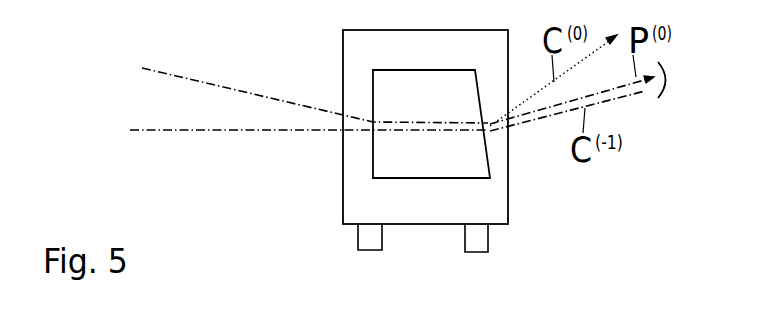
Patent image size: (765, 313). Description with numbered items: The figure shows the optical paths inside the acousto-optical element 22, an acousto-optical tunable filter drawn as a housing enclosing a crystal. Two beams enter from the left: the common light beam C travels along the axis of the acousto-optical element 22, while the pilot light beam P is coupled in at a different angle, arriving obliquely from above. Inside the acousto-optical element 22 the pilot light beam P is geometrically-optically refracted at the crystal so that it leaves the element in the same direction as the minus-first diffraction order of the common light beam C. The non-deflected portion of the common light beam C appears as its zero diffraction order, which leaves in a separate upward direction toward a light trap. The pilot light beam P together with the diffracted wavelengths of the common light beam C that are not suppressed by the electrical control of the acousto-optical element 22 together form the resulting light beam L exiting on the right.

The acousto-optical element 22 is at (343, 176).
The pilot light beam P is at (253, 93).
The common light beam C is at (180, 133).
The resulting light beam L is at (674, 78).